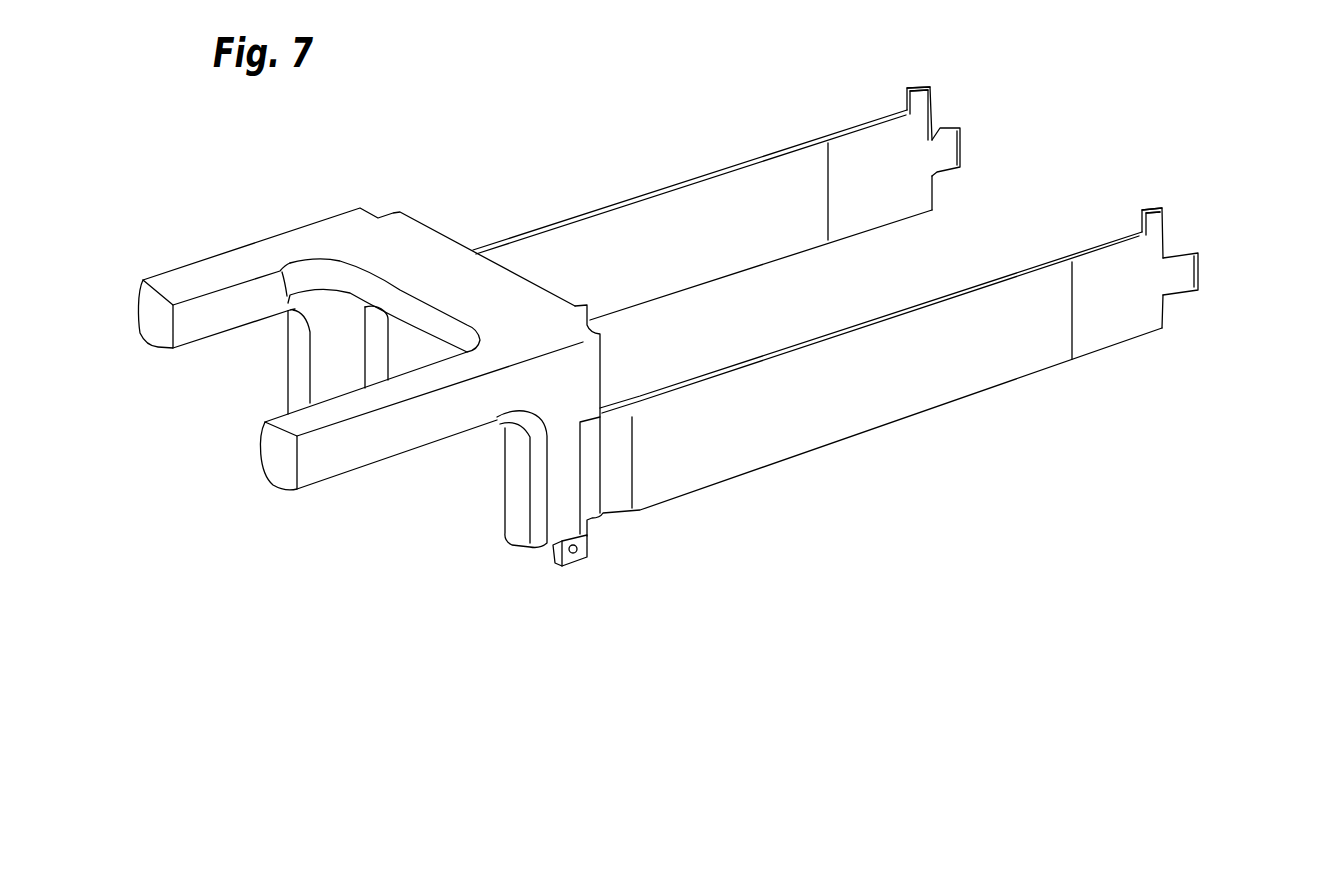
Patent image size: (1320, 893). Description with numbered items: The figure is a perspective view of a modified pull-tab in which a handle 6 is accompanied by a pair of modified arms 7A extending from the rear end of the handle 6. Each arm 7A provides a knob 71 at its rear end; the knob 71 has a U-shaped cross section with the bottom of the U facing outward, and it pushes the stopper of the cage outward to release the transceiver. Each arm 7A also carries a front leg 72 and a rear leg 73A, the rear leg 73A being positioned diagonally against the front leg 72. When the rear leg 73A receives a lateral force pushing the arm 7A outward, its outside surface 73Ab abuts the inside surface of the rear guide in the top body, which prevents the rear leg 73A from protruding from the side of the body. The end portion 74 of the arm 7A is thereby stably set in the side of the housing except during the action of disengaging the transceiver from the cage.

The handle 6 is at (229, 265).
The modified arm 7A is at (730, 153).
The rear leg 73A is at (938, 90).
The outside surface 73Ab is at (907, 88).
The knob 71 is at (955, 150).
The end portion 74 is at (1117, 312).
The front leg 72 is at (578, 560).